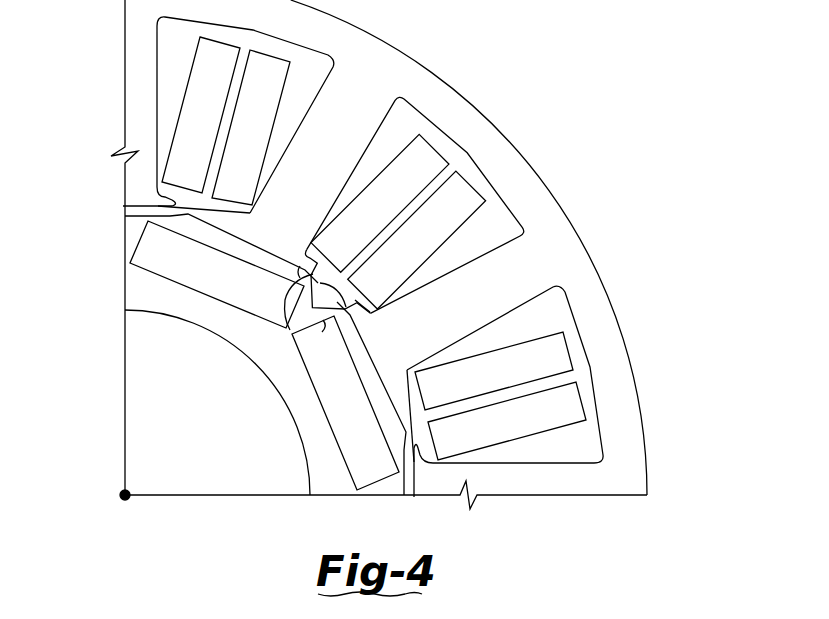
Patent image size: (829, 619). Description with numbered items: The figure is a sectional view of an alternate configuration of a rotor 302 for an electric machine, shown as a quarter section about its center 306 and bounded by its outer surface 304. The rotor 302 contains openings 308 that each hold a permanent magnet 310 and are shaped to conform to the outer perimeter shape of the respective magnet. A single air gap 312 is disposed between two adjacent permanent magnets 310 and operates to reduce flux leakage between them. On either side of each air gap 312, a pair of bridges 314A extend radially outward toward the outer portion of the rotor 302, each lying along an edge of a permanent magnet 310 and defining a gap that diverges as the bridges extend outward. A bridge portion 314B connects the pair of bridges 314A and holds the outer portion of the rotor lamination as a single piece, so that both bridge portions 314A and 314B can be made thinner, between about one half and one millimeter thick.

The rotor 302 is at (147, 293).
The outer surface of rotor 304 is at (647, 416).
The rotational axis 306 is at (120, 495).
The openings 308 is at (192, 233).
The permanent magnets 310 is at (236, 287).
The air gap 312 is at (316, 304).
The bridges 314A is at (292, 262).
The bridge portion 314B is at (355, 300).